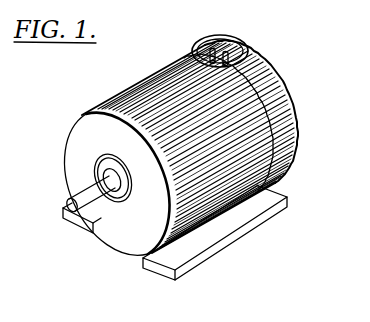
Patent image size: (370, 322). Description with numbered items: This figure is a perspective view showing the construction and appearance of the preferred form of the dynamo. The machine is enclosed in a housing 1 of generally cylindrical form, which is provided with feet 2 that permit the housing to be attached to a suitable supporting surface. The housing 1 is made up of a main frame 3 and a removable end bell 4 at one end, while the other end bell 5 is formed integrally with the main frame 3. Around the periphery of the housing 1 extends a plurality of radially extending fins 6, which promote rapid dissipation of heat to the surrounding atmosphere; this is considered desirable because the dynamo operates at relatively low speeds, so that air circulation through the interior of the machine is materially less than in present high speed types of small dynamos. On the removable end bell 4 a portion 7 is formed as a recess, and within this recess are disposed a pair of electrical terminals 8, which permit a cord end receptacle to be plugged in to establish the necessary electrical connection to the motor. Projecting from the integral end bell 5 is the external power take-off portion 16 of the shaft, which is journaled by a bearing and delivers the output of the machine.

The housing 1 is at (173, 149).
The feet 2 is at (76, 222).
The main frame 3 is at (225, 207).
The removable end bell 4 is at (272, 82).
The end bell 5 is at (117, 219).
The fins 6 is at (288, 120).
The portion of the removable end bell 7 is at (237, 40).
The electrical terminals 8 is at (226, 54).
The external power take-off portion 16 is at (82, 188).